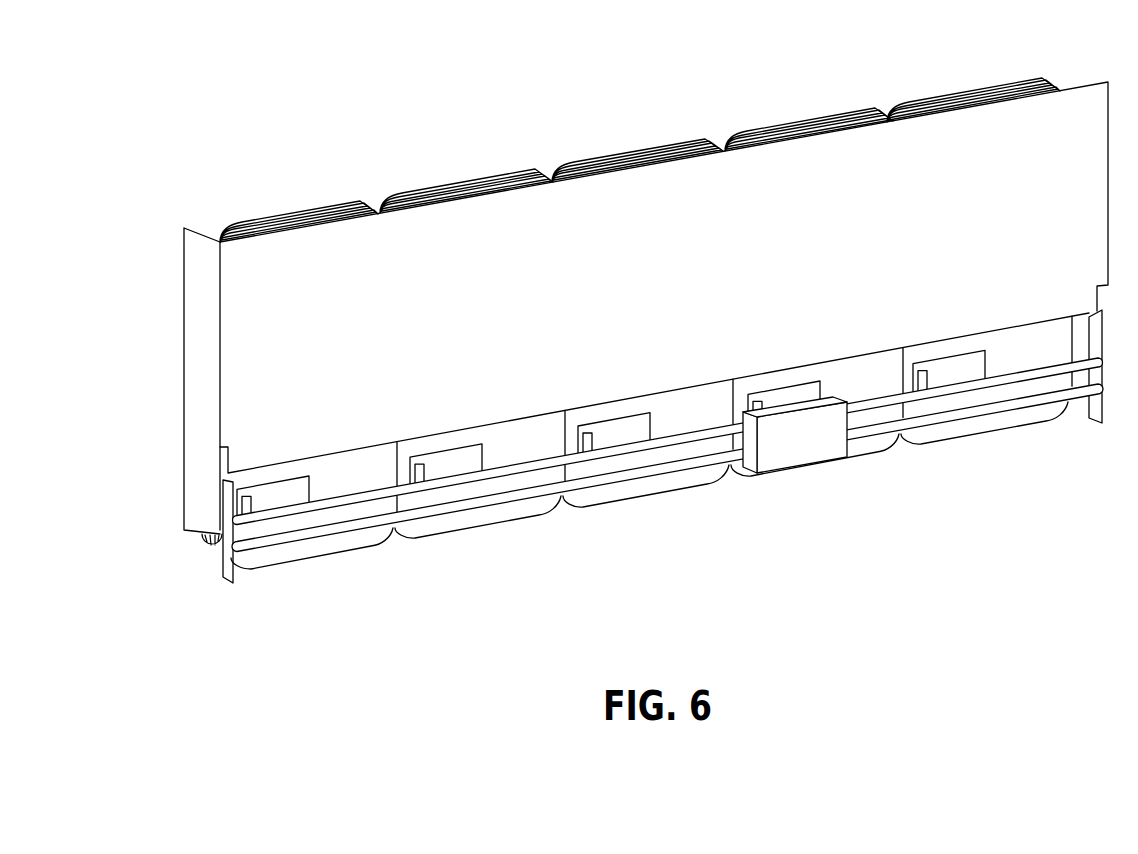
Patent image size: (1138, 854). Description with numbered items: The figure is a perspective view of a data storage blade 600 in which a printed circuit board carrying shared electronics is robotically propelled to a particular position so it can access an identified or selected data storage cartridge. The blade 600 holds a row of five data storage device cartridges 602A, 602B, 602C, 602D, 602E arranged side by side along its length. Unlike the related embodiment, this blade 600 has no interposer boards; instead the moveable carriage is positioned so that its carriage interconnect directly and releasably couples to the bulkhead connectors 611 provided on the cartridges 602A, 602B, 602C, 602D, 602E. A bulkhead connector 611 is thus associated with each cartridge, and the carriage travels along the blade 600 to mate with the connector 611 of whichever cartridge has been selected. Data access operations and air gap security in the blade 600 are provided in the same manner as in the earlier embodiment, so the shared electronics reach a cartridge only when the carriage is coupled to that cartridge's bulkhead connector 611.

The data storage blade 600 is at (150, 144).
The data storage device cartridge 602A is at (336, 208).
The data storage device cartridge 602B is at (505, 177).
The data storage device cartridge 602C is at (682, 140).
The data storage device cartridge 602D is at (855, 110).
The data storage device cartridge 602E is at (1025, 82).
The bulkhead connector 611 is at (272, 496).